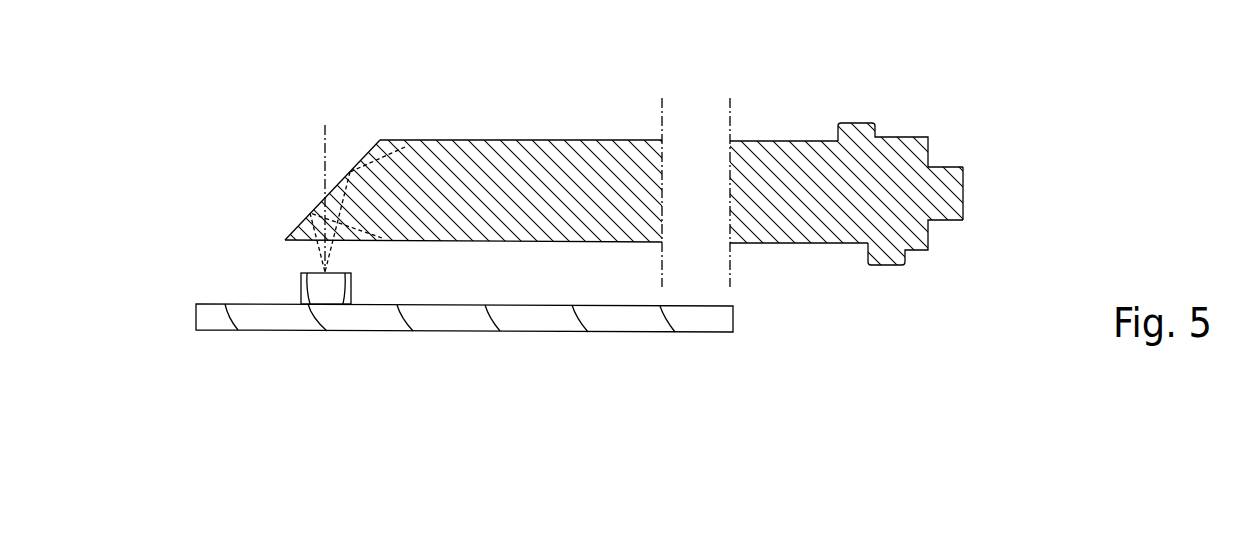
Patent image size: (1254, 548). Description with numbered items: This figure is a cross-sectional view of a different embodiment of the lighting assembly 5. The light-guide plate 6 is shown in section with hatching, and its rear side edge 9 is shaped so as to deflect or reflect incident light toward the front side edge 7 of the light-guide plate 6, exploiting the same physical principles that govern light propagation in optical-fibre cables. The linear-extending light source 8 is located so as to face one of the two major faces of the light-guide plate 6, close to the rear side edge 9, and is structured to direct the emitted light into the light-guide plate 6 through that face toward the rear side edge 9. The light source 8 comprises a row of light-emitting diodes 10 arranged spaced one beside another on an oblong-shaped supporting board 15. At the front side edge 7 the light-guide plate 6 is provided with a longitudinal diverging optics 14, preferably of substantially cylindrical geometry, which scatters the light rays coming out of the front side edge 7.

The lighting assembly 5 is at (394, 120).
The light-guide plate 6 is at (548, 163).
The front side edge 7 is at (973, 195).
The linear-extending light source 8 is at (276, 278).
The rear side edge 9 is at (314, 192).
The light-emitting diodes 10 is at (330, 288).
The longitudinal diverging optics 14 is at (927, 147).
The supporting board 15 is at (287, 318).